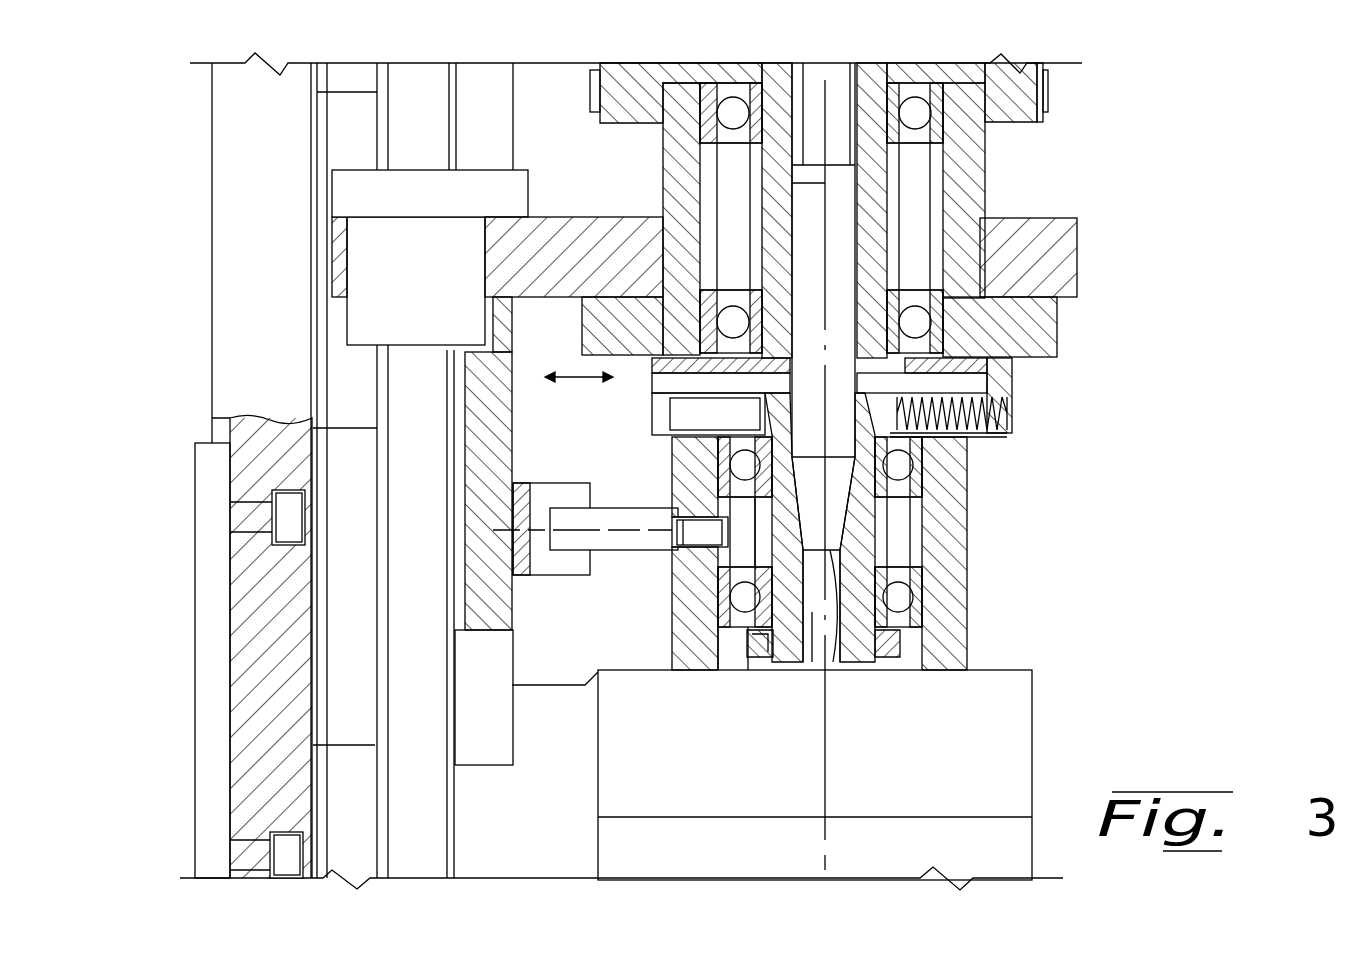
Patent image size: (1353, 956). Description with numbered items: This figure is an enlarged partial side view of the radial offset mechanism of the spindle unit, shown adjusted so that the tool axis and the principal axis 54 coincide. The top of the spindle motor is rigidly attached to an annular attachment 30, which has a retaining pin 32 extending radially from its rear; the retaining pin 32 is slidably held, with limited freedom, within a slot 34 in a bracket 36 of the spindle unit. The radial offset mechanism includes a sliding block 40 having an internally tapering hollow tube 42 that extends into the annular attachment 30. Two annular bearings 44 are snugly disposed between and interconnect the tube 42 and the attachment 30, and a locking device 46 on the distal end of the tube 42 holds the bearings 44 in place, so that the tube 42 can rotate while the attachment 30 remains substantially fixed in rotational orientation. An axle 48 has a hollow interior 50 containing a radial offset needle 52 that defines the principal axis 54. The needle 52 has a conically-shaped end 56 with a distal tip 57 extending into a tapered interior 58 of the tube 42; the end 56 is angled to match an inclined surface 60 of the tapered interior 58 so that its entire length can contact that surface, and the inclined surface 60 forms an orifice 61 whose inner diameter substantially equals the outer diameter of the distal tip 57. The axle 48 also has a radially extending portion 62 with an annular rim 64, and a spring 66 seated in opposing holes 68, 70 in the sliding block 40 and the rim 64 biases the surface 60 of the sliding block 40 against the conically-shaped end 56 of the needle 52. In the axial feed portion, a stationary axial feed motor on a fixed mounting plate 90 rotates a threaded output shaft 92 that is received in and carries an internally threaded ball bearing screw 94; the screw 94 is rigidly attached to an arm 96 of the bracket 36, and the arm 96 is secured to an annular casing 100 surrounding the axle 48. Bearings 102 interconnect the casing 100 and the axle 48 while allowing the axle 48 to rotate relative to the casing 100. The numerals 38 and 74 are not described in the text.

The annular attachment 30 is at (960, 625).
The retaining pin 32 is at (620, 508).
The slot 34 is at (549, 490).
The bracket 36 is at (561, 626).
The bolt shank 38 is at (650, 535).
The sliding block 40 is at (960, 322).
The hollow tube 42 is at (785, 552).
The annular bearings 44 is at (727, 470).
The locking device 46 is at (750, 658).
The axle 48 is at (852, 196).
The hollow interior 50 is at (857, 228).
The radial offset needle 52 is at (840, 400).
The principal axis 54 is at (800, 185).
The conically-shaped end 56 is at (842, 480).
The distal tip 57 is at (830, 660).
The tapered interior 58 is at (950, 252).
The inclined surface 60 is at (1012, 566).
The orifice 61 is at (812, 647).
The radially extending portion 62 is at (985, 337).
The annular rim 64 is at (1013, 400).
The spring 66 is at (983, 430).
The hole 68 is at (862, 453).
The hole 70 is at (1007, 422).
The adjustment direction 74 is at (575, 377).
The fixed mounting plate 90 is at (276, 140).
The threaded output shaft 92 is at (398, 377).
The ball bearing screw 94 is at (403, 279).
The arm 96 is at (557, 232).
The annular casing 100 is at (680, 137).
The bearings 102 is at (732, 105).